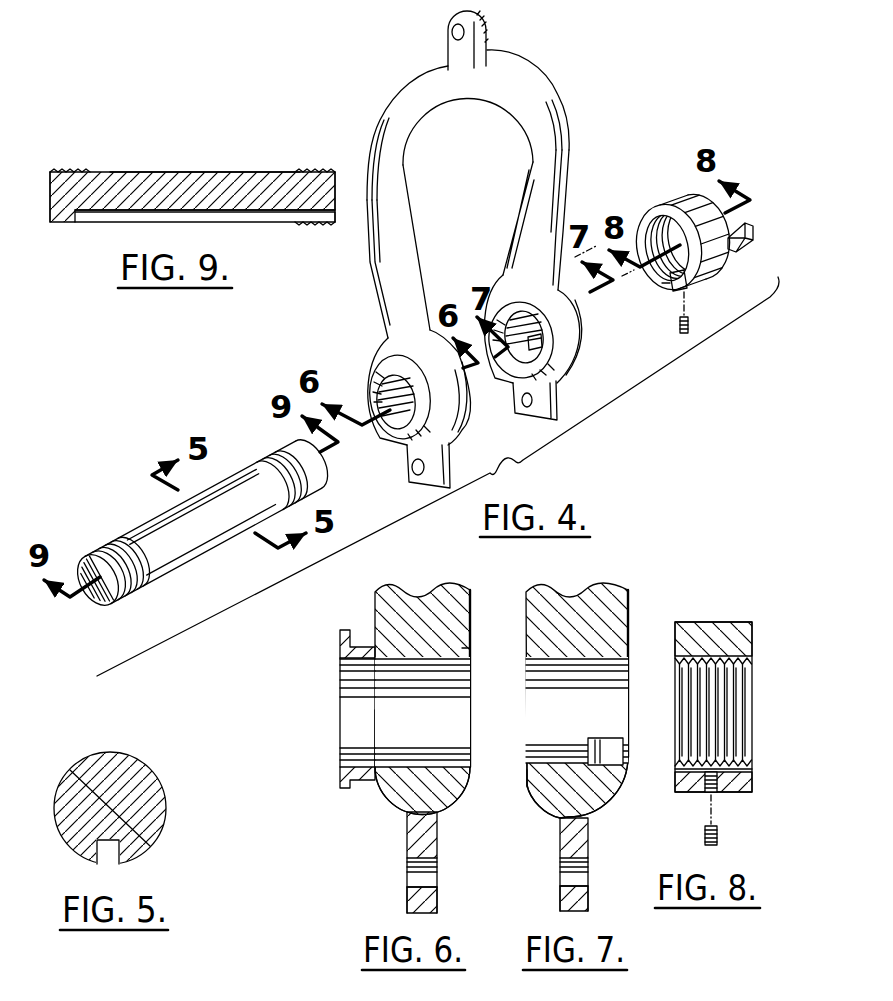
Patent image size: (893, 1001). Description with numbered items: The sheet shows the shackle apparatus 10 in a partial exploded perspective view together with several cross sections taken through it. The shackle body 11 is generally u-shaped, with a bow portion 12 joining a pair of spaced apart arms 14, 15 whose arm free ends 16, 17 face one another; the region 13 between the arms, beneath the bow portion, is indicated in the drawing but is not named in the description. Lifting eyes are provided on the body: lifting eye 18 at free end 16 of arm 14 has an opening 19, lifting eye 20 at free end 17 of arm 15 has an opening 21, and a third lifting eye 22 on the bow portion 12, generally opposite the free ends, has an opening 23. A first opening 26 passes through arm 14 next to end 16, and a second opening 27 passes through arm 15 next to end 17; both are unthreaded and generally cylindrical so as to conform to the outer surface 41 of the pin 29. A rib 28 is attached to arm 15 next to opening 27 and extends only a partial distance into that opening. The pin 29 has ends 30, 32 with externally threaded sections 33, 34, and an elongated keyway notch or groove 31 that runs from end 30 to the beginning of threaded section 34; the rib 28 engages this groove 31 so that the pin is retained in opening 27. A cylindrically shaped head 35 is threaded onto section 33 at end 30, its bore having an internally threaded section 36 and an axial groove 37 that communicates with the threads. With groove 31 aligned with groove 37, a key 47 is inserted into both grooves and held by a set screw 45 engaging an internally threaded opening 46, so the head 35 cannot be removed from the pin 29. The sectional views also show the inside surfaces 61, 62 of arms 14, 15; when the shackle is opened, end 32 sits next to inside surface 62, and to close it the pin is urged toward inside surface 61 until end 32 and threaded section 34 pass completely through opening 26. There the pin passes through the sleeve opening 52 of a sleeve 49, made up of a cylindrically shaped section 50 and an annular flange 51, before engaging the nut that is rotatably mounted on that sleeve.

In FIG. 4, the shackle apparatus 10 is at (515, 462).
In FIG. 4, the shackle body 11 is at (478, 257).
In FIG. 4, the bow portion 12 is at (373, 245).
In FIG. 4, the opening 13 is at (468, 138).
In FIG. 6, the arm 14 is at (394, 743).
In FIG. 4, the arm 14 is at (402, 303).
In FIG. 7, the arm 15 is at (579, 742).
In FIG. 4, the arm 15 is at (522, 234).
In FIG. 6, the arm free end 16 is at (393, 808).
In FIG. 4, the arm free end 16 is at (424, 419).
In FIG. 7, the arm free end 17 is at (601, 813).
In FIG. 4, the arm free end 17 is at (549, 350).
In FIG. 6, the lifting eye 18 is at (387, 864).
In FIG. 4, the lifting eye 18 is at (411, 480).
In FIG. 6, the opening 19 is at (407, 877).
In FIG. 7, the lifting eye 20 is at (542, 864).
In FIG. 4, the lifting eye 20 is at (550, 398).
In FIG. 7, the opening 21 is at (560, 878).
In FIG. 4, the lifting eye 22 is at (463, 38).
In FIG. 4, the opening 23 is at (452, 30).
In FIG. 6, the first opening 26 is at (445, 720).
In FIG. 4, the first opening 26 is at (388, 430).
In FIG. 7, the second opening 27 is at (548, 705).
In FIG. 4, the second opening 27 is at (517, 348).
In FIG. 7, the rib 28 is at (600, 740).
In FIG. 4, the rib 28 is at (540, 340).
In FIG. 9, the pin 29 is at (196, 194).
In FIG. 5, the pin 29 is at (126, 795).
In FIG. 4, the pin 29 is at (199, 525).
In FIG. 9, the end 30 is at (340, 190).
In FIG. 4, the end 30 is at (207, 520).
In FIG. 9, the groove 31 is at (98, 224).
In FIG. 5, the groove 31 is at (108, 856).
In FIG. 9, the end 32 is at (50, 190).
In FIG. 4, the end 32 is at (102, 600).
In FIG. 9, the externally threaded section 33 is at (318, 174).
In FIG. 9, the externally threaded section 34 is at (90, 173).
In FIG. 8, the head 35 is at (714, 707).
In FIG. 4, the head 35 is at (670, 235).
In FIG. 8, the internally threaded section 36 is at (752, 683).
In FIG. 4, the internally threaded section 36 is at (645, 228).
In FIG. 8, the groove 37 is at (715, 804).
In FIG. 4, the groove 37 is at (668, 283).
In FIG. 9, the outer surface 41 is at (240, 170).
In FIG. 5, the outer surface 41 is at (88, 752).
In FIG. 4, the outer surface 41 is at (238, 464).
In FIG. 8, the set screw 45 is at (717, 837).
In FIG. 4, the set screw 45 is at (688, 320).
In FIG. 8, the internally threaded opening 46 is at (712, 793).
In FIG. 4, the key 47 is at (750, 247).
In FIG. 6, the sleeve 49 is at (324, 709).
In FIG. 6, the cylindrically shaped section 50 is at (355, 748).
In FIG. 6, the annular flange 51 is at (345, 788).
In FIG. 6, the sleeve opening 52 is at (360, 706).
In FIG. 6, the inside surface 61 is at (462, 648).
In FIG. 7, the inside surface 62 is at (527, 787).